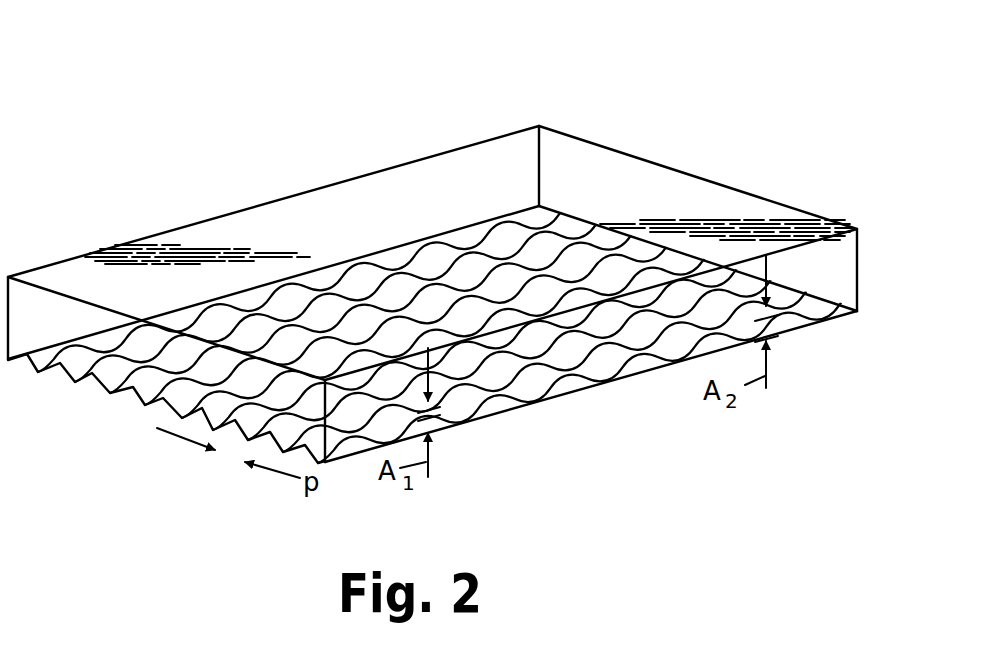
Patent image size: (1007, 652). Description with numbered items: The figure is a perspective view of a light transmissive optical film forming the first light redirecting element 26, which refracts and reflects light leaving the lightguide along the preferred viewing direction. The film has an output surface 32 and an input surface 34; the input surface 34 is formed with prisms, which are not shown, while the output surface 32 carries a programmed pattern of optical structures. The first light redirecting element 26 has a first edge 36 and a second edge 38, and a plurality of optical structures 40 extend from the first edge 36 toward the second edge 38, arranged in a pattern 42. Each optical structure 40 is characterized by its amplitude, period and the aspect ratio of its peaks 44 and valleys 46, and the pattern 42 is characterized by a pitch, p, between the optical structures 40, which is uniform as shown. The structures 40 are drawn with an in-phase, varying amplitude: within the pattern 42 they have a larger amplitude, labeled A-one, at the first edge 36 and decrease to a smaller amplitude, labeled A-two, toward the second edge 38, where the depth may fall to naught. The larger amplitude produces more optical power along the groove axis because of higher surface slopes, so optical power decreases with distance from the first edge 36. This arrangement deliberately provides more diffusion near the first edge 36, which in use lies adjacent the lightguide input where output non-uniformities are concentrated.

The first light redirecting element 26 is at (591, 70).
The output surface 32 is at (803, 328).
The input surface 34 is at (570, 170).
The first edge 36 is at (140, 400).
The second edge 38 is at (770, 206).
The optical structures 40 is at (91, 382).
The pattern 42 is at (483, 442).
The peaks 44 is at (530, 392).
The valleys 46 is at (638, 347).